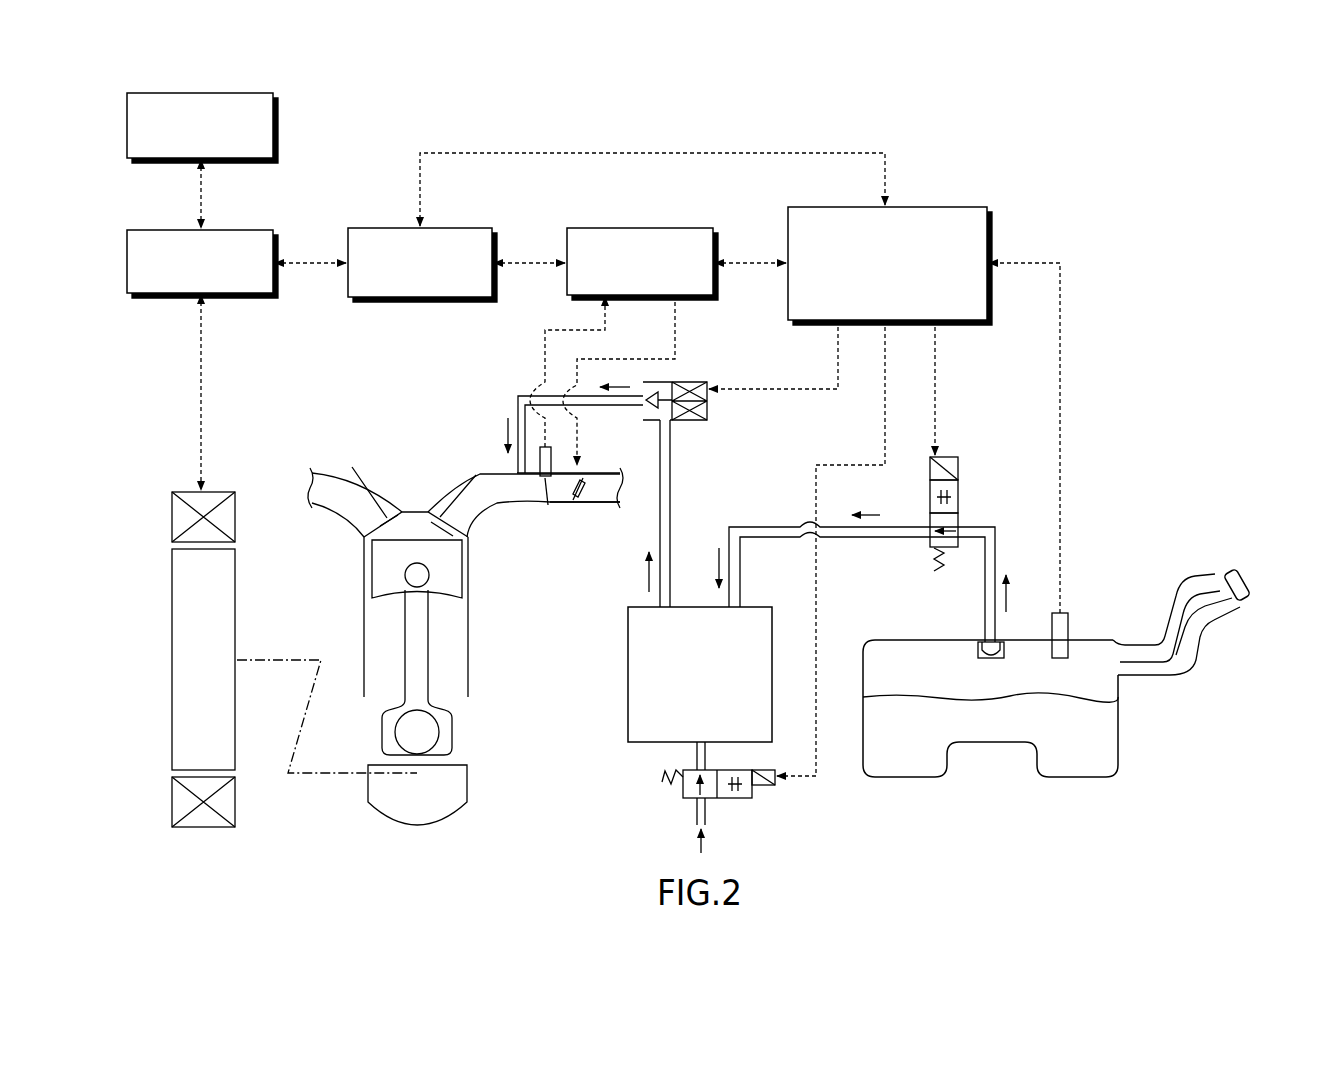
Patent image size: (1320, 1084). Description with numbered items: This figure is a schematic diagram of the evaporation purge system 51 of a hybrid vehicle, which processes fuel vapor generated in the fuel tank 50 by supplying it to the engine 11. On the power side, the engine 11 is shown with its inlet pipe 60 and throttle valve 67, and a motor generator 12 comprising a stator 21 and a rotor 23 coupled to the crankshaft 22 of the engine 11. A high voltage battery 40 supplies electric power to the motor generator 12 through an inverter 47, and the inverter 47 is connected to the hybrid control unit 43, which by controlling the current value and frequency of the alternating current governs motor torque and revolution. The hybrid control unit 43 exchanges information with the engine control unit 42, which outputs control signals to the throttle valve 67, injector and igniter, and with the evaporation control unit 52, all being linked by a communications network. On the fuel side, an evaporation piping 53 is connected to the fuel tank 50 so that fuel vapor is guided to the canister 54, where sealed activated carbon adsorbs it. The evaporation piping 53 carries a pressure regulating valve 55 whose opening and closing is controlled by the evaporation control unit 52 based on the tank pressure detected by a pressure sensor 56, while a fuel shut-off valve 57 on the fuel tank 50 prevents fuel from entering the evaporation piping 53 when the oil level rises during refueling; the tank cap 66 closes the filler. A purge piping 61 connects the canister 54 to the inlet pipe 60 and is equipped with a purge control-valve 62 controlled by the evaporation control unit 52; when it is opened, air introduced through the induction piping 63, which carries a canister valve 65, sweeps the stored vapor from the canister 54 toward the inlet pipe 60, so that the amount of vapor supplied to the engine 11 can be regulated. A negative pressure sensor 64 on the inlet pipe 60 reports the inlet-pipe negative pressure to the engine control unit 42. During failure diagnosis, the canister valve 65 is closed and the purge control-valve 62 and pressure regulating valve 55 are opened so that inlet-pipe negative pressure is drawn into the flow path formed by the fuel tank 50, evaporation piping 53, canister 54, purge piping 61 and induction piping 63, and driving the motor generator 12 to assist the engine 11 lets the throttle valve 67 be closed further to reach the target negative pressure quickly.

The engine 11 is at (465, 593).
The motor generator 12 is at (172, 617).
The stator 21 is at (172, 517).
The crankshaft 22 is at (467, 783).
The rotor 23 is at (172, 636).
The high voltage battery 40 is at (275, 118).
The engine control unit 42 is at (670, 228).
The hybrid control unit 43 is at (448, 228).
The inverter 47 is at (232, 229).
The fuel tank 50 is at (1118, 727).
The evaporation purge system 51 is at (1118, 360).
The evaporation control unit 52 is at (942, 207).
The evaporation piping 53 is at (757, 527).
The canister 54 is at (628, 670).
The pressure regulating valve 55 is at (960, 473).
The pressure sensor 56 is at (1068, 622).
The fuel shut-off valve 57 is at (980, 640).
The inlet pipe 60 is at (487, 473).
The purge piping 61 is at (518, 396).
The purge control-valve 62 is at (680, 382).
The induction piping 63 is at (697, 757).
The negative pressure sensor 64 is at (543, 491).
The canister valve 65 is at (778, 788).
The tank cap 66 is at (1250, 580).
The throttle valve 67 is at (574, 502).